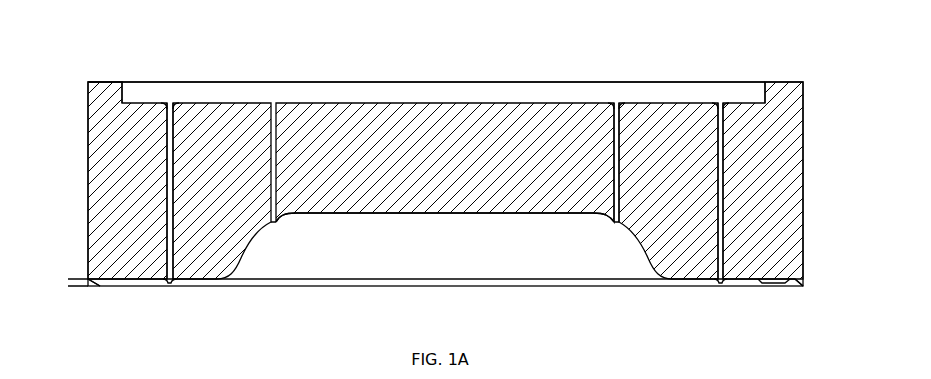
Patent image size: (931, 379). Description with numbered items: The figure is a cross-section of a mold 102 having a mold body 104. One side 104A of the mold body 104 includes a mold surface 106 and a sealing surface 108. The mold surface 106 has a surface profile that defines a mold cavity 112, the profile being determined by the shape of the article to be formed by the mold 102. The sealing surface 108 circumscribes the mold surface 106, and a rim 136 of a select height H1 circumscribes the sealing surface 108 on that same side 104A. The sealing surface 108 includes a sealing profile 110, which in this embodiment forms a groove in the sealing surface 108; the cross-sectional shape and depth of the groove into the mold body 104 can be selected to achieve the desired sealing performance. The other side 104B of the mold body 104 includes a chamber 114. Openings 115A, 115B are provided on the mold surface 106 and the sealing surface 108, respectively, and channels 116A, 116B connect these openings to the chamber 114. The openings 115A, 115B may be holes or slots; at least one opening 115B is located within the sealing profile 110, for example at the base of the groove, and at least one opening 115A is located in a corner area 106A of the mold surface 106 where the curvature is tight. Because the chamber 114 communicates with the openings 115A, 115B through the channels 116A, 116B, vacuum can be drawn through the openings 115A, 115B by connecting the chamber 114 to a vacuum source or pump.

The mold 102 is at (450, 63).
The mold body 104 is at (804, 176).
The side of the mold body 104A is at (97, 288).
The other side of the mold body 104B is at (110, 83).
The mold surface 106 is at (470, 215).
The corner area 106A is at (607, 218).
The sealing surface 108 is at (758, 282).
The sealing profile 110 is at (170, 283).
The mold cavity 112 is at (390, 256).
The chamber 114 is at (764, 86).
The opening 115A is at (271, 223).
The opening 115B is at (172, 285).
The channel 116A is at (614, 102).
The channel 116B is at (718, 102).
The rim 136 is at (791, 287).
The height of the rim H1 is at (75, 300).